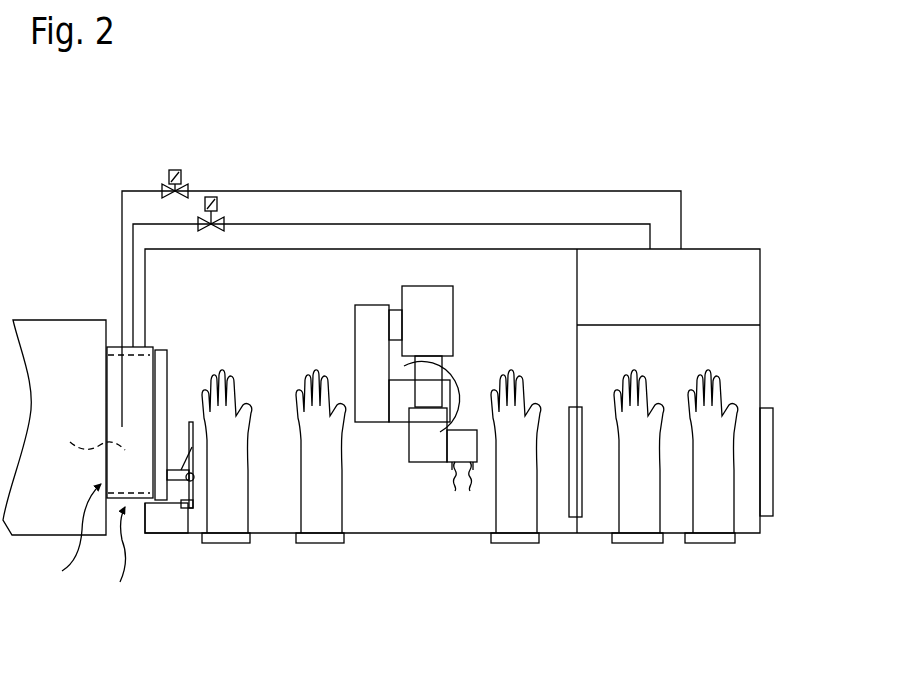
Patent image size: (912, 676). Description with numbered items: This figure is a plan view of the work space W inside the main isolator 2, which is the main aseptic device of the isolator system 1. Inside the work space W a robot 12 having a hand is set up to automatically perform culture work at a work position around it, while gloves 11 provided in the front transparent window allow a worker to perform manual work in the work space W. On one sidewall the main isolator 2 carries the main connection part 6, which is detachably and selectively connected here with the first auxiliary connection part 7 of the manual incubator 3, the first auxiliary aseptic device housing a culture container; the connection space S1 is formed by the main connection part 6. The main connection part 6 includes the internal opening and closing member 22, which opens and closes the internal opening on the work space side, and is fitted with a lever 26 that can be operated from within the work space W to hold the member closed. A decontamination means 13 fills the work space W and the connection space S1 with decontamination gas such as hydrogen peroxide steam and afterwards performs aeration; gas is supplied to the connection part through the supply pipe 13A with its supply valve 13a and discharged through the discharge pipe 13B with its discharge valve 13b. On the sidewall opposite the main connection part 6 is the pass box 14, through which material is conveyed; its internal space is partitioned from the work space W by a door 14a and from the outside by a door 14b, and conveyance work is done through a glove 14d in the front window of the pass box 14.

The isolator system 1 is at (538, 170).
The main isolator 2 is at (318, 248).
The manual incubator 3 is at (37, 320).
The main connection part 6 is at (116, 558).
The first auxiliary connection part 7 is at (72, 540).
The glove 11 is at (222, 523).
The robot 12 is at (445, 306).
The decontamination means 13 is at (441, 259).
The supply pipe 13A is at (420, 191).
The discharge pipe 13B is at (485, 224).
The supply valve 13a is at (175, 170).
The discharge valve 13b is at (211, 197).
The pass box 14 is at (713, 491).
The door 14a is at (585, 422).
The door 14b is at (773, 437).
The glove 14d is at (707, 518).
The internal opening and closing member 22 is at (170, 377).
The lever 26 is at (190, 510).
The connection space S1 is at (87, 429).
The work space W is at (288, 316).